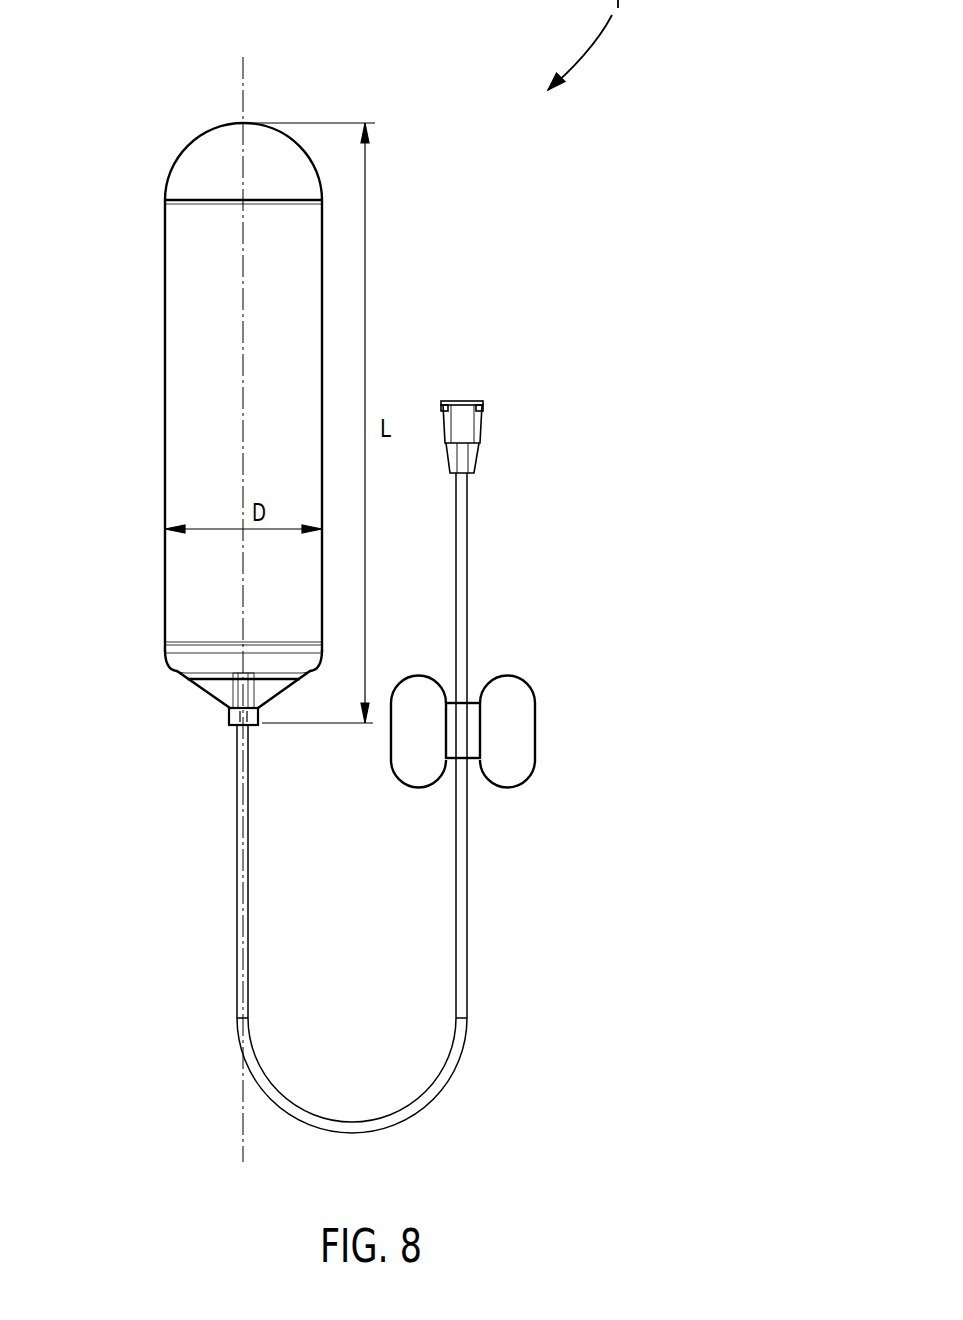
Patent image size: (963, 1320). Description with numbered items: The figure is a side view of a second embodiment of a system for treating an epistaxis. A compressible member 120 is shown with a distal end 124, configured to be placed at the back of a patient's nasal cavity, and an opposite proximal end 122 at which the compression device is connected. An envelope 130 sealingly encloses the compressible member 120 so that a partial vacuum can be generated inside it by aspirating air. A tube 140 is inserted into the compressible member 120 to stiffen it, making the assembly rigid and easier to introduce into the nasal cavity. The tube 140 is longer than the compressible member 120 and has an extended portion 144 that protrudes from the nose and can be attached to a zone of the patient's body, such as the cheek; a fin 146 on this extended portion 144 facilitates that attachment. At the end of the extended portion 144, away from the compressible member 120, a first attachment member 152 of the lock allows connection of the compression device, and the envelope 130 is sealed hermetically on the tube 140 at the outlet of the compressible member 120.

The compressible member 120 is at (198, 401).
The proximal end 122 is at (198, 662).
The distal end 124 is at (253, 138).
The envelope 130 is at (220, 692).
The tube 140 is at (238, 919).
The extended portion 144 is at (460, 914).
The fin 146 is at (415, 766).
The first attachment member 152 is at (460, 413).